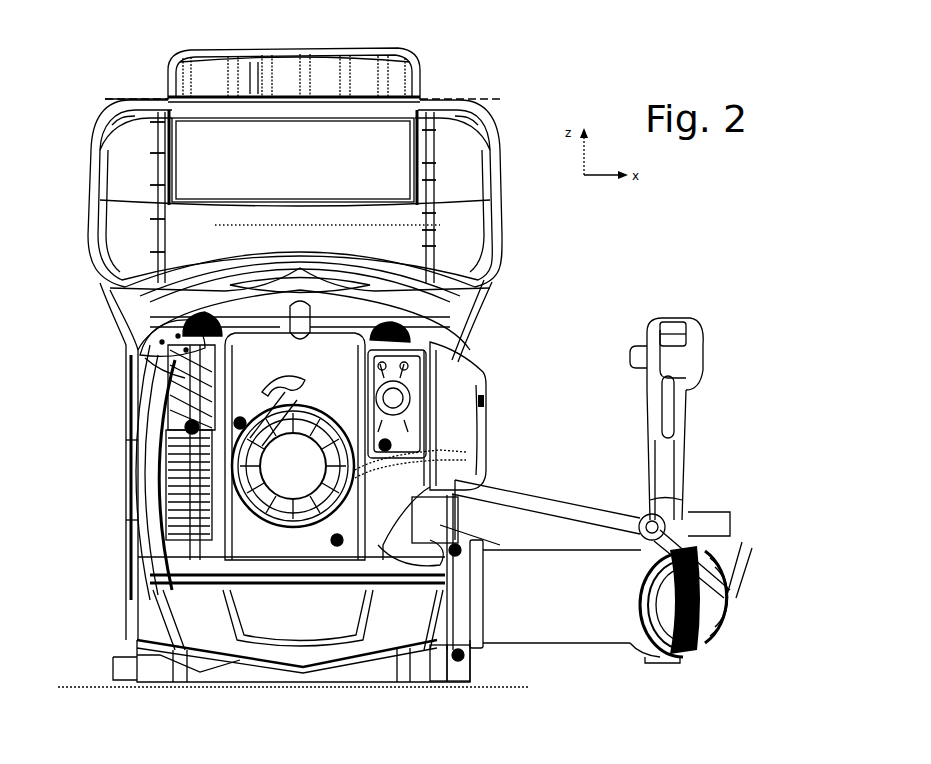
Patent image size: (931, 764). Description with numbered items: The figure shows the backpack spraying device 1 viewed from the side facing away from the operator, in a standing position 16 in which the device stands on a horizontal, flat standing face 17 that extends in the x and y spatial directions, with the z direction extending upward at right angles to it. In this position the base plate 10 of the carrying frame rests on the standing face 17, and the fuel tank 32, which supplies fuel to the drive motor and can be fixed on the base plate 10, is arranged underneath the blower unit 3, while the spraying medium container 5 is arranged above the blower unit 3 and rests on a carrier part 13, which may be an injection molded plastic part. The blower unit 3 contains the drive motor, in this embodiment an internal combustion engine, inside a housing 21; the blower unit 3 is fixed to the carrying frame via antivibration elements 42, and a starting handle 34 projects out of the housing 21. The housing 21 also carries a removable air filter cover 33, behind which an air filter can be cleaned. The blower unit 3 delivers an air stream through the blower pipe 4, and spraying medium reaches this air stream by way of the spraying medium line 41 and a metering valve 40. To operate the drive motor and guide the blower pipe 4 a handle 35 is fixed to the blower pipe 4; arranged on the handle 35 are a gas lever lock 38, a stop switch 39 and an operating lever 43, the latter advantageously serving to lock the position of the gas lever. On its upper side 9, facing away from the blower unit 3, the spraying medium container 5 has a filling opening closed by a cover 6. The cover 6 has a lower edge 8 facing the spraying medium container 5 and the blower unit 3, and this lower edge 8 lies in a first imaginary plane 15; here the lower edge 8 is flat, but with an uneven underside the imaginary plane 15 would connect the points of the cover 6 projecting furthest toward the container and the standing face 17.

The spraying device 1 is at (602, 238).
The blower unit 3 is at (125, 530).
The blower pipe 4 is at (577, 618).
The spraying medium container 5 is at (493, 198).
The cover 6 is at (326, 52).
The lower edge 8 is at (264, 92).
The upper side 9 is at (428, 112).
The base plate 10 is at (466, 660).
The carrier part 13 is at (470, 306).
The imaginary plane 15 is at (482, 97).
The standing position 16 is at (84, 80).
The standing face 17 is at (97, 685).
The housing 21 is at (472, 470).
The fuel tank 32 is at (208, 640).
The air filter cover 33 is at (465, 395).
The starting handle 34 is at (175, 352).
The handle 35 is at (673, 468).
The gas lever lock 38 is at (672, 396).
The stop switch 39 is at (673, 326).
The metering valve 40 is at (716, 520).
The spraying medium line 41 is at (533, 514).
The antivibration elements 42 is at (150, 310).
The operating lever 43 is at (632, 357).